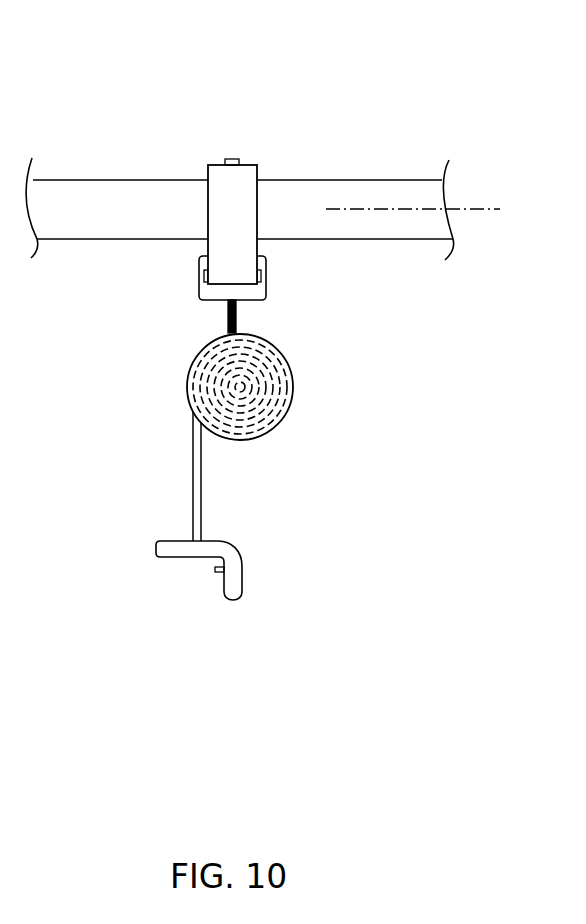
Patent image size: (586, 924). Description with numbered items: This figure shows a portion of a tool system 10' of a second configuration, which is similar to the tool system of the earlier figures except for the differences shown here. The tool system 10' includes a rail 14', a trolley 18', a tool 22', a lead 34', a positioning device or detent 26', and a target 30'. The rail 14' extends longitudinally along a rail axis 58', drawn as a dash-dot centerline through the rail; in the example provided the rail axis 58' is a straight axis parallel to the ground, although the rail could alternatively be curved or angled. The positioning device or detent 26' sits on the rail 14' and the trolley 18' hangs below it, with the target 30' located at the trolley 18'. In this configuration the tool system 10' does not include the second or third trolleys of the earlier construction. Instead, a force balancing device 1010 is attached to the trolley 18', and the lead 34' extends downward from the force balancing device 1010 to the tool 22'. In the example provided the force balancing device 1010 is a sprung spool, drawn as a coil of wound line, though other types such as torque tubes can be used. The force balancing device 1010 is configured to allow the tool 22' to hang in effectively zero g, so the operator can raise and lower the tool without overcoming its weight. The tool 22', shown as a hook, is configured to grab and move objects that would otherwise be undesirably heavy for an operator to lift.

The tool system 10' is at (275, 325).
The rail 14' is at (240, 185).
The trolley 18' is at (189, 293).
The tool 22' is at (246, 585).
The positioning device or detent 26' is at (259, 189).
The target 30' is at (303, 300).
The lead 34' is at (243, 476).
The rail axis 58' is at (425, 169).
The force balancing device 1010 is at (293, 404).